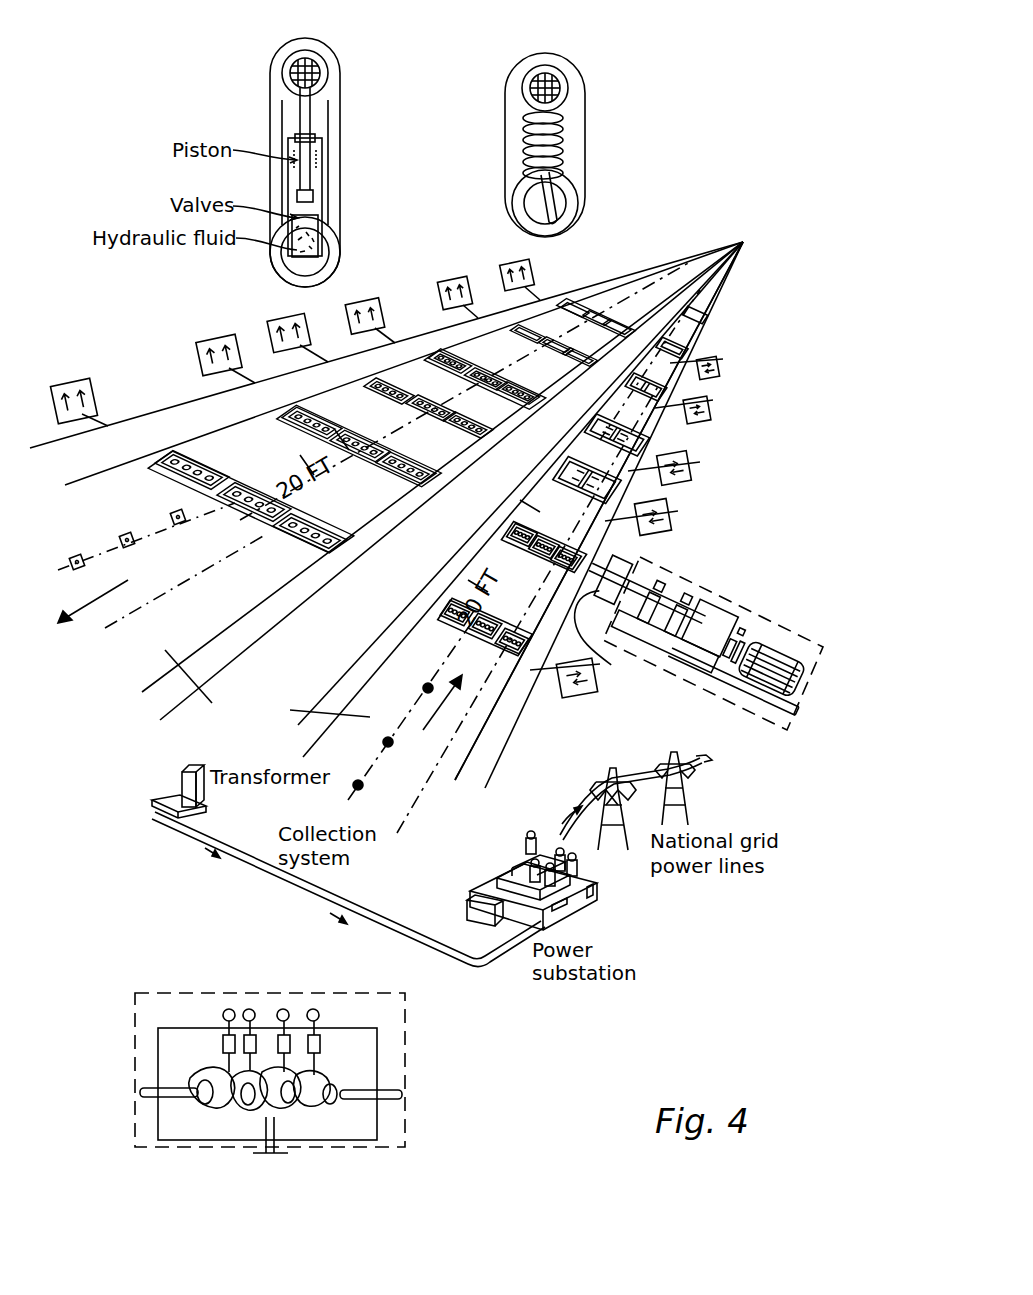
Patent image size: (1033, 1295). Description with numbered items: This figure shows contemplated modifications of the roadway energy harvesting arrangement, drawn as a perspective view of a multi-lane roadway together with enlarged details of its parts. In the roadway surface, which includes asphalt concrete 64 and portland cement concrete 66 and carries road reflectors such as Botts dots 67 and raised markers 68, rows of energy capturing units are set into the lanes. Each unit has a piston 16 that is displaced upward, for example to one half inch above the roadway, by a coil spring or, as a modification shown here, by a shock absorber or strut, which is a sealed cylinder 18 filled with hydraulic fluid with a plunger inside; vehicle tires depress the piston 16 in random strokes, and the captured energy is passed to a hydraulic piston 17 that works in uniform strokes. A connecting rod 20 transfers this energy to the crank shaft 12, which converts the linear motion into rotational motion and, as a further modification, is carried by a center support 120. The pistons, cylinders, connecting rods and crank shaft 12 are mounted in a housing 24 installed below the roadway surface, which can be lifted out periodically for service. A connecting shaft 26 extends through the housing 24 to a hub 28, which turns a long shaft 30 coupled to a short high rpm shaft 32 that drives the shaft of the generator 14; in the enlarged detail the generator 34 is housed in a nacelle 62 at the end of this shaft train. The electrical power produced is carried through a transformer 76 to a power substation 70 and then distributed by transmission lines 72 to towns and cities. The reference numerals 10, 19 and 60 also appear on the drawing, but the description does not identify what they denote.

The roadway energy harvesting system 10 is at (145, 378).
The crank shaft 12 is at (402, 1097).
The generator 14 is at (792, 705).
The piston 16 is at (295, 58).
The hydraulic piston 17 is at (222, 1037).
The cylinder 18 is at (340, 118).
The cylinder head 19 is at (283, 73).
The connecting rod 20 is at (224, 1072).
The housing 24 is at (333, 532).
The connecting shaft 26 is at (528, 666).
The hub 28 is at (660, 640).
The long shaft 30 is at (683, 620).
The short high rpm shaft 32 is at (733, 652).
The generator 34 is at (788, 654).
The plate module 60 is at (264, 530).
The nacelle 62 is at (688, 578).
The asphalt concrete 64 is at (203, 687).
The portland cement concrete 66 is at (314, 711).
The Botts dots 67 is at (388, 742).
The raised markers 68 is at (127, 533).
The power substation 70 is at (583, 906).
The transmission lines 72 is at (580, 847).
The transformer 76 is at (181, 780).
The center support 120 is at (276, 1130).